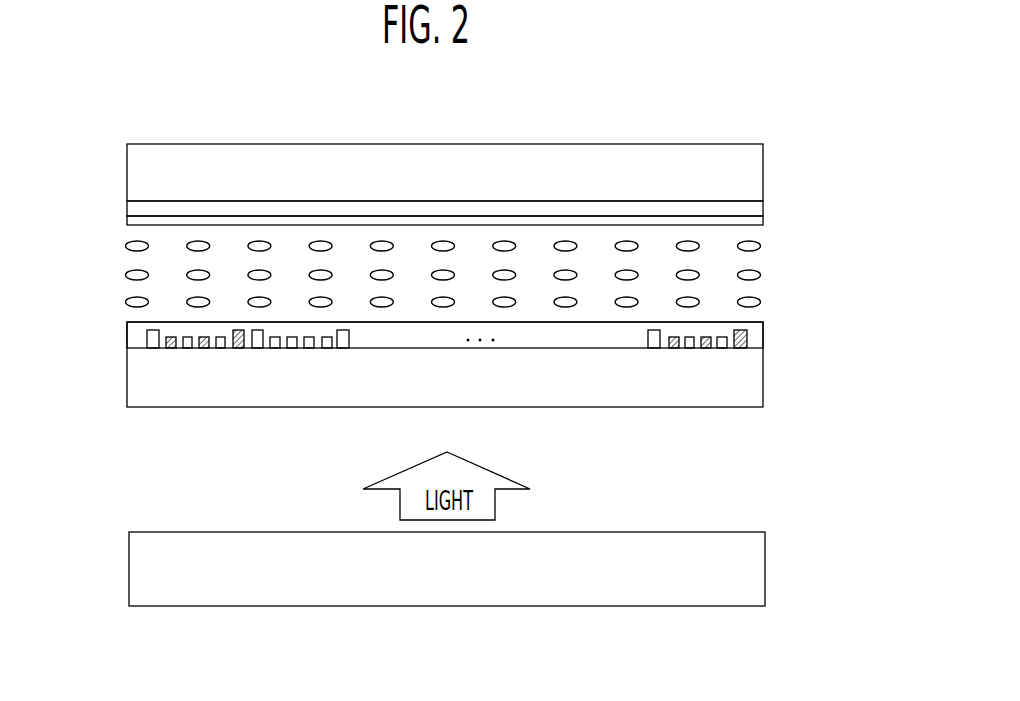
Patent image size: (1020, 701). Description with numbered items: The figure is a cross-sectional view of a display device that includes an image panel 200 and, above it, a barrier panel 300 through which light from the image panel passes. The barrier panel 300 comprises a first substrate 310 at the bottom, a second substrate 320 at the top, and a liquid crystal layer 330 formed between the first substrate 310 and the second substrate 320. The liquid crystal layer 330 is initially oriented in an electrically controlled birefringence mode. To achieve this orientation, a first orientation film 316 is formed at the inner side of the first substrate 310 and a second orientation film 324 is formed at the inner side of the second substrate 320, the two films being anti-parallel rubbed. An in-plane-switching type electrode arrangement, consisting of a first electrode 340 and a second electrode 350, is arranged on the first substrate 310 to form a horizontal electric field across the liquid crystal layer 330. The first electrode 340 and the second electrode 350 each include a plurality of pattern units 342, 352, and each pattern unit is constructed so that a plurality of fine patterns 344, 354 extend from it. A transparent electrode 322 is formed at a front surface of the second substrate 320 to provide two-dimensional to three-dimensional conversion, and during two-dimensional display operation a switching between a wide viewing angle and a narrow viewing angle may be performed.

The image panel 200 is at (760, 578).
The barrier panel 300 is at (703, 117).
The first substrate 310 is at (763, 383).
The first orientation film 316 is at (763, 333).
The second substrate 320 is at (763, 160).
The transparent electrode 322 is at (763, 204).
The second orientation film 324 is at (763, 219).
The liquid crystal layer 330 is at (122, 272).
The first electrode 340 is at (212, 450).
The pattern unit 342 is at (153, 348).
The fine pattern 344 is at (221, 348).
The second electrode 350 is at (305, 450).
The pattern unit 352 is at (240, 348).
The fine pattern 354 is at (171, 348).